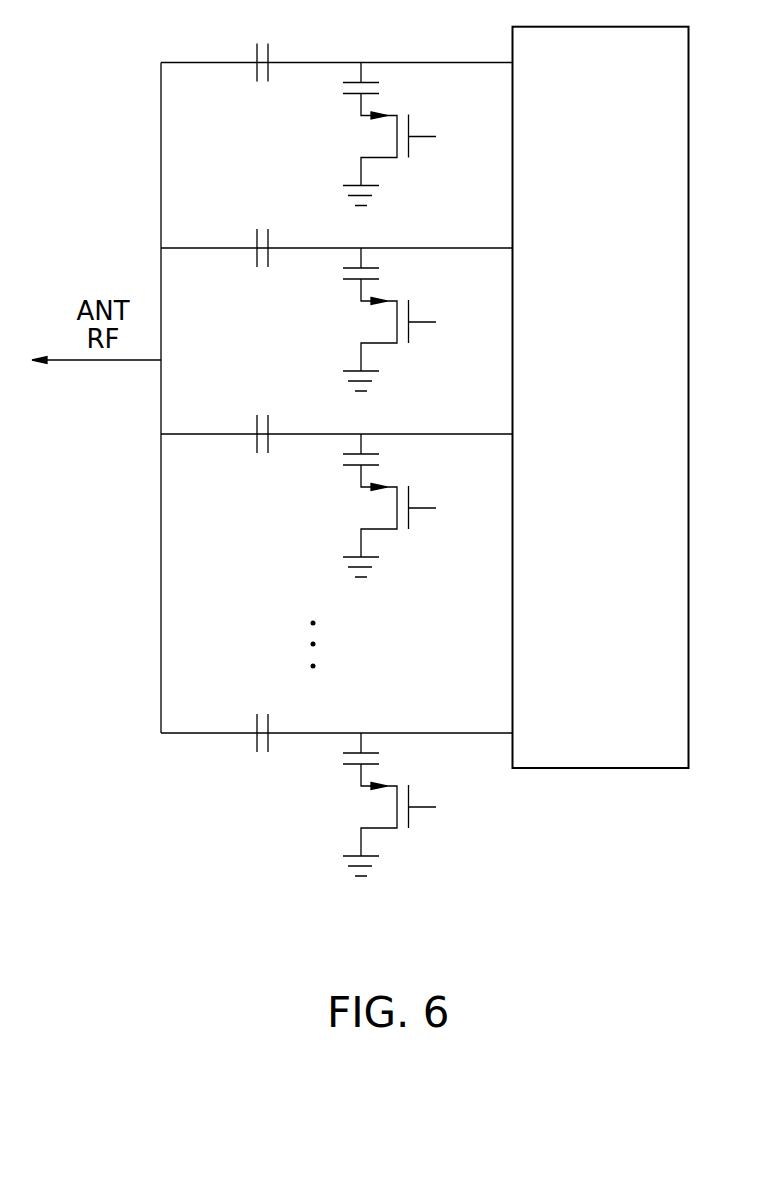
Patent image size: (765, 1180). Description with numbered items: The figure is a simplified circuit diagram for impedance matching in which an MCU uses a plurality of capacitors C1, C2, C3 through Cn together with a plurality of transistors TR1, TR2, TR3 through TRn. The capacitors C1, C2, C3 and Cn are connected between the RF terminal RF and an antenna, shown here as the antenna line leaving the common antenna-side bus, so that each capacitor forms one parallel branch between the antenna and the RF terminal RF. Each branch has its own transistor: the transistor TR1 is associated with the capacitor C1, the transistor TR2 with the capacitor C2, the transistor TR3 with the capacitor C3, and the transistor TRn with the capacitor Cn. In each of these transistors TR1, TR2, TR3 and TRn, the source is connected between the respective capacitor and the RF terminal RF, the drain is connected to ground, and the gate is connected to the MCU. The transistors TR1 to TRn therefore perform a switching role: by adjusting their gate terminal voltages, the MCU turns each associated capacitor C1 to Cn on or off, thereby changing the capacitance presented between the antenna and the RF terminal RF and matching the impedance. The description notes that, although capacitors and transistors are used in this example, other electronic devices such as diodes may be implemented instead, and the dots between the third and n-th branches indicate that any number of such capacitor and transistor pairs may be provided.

The capacitor C1 is at (267, 82).
The capacitor C2 is at (267, 267).
The capacitor C3 is at (267, 453).
The capacitor Cn is at (267, 752).
The transistor TR1 is at (413, 134).
The transistor TR2 is at (413, 319).
The transistor TR3 is at (413, 505).
The transistor TRn is at (413, 804).
The RF terminal RF is at (601, 397).